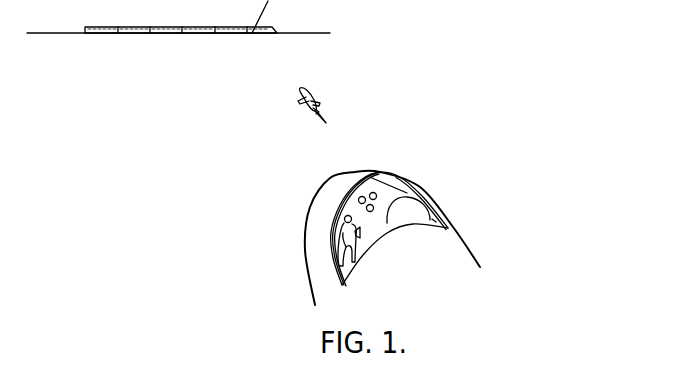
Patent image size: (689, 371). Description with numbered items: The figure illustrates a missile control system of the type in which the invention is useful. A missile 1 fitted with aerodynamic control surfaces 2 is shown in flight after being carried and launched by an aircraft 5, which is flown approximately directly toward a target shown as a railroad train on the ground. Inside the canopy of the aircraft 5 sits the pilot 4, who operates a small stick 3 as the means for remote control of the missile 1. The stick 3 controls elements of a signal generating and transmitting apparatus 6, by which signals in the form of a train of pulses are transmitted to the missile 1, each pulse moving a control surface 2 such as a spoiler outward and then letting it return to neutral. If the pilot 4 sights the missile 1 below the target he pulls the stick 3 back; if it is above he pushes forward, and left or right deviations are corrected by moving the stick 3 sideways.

The missile 1 is at (300, 103).
The aerodynamic control surfaces 2 is at (308, 92).
The stick 3 is at (345, 218).
The pilot 4 is at (415, 197).
The aircraft 5 is at (305, 264).
The signal generating and transmitting apparatus 6 is at (361, 239).